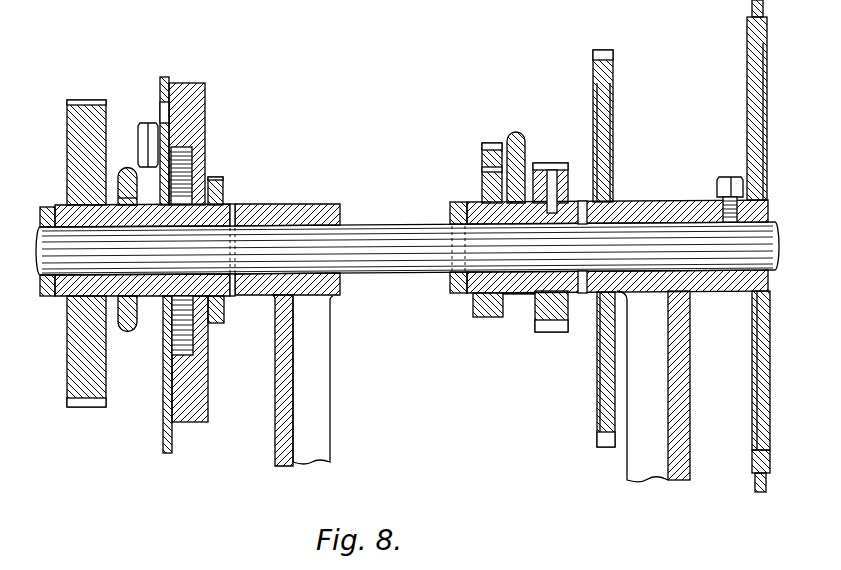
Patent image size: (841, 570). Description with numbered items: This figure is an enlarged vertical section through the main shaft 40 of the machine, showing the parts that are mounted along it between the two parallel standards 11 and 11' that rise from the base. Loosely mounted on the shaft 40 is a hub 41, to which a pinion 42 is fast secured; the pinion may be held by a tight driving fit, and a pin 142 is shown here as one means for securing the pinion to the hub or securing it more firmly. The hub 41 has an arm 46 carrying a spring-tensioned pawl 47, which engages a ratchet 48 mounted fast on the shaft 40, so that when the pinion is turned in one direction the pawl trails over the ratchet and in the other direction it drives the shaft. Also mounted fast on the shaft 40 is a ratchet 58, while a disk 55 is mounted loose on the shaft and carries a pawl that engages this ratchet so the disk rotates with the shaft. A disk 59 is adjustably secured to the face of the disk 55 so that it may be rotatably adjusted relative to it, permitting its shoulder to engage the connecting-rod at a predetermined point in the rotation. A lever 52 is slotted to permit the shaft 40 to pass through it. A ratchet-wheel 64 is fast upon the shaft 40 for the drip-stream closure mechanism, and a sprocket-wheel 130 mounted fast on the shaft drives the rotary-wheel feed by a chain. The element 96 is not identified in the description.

The shaft 40 is at (425, 266).
The ratchet-wheel 64 is at (67, 150).
The lever 52 is at (128, 332).
The disk 59 is at (162, 90).
The disk 55 is at (200, 109).
The ratchet 58 is at (223, 184).
The standard 11 is at (323, 380).
The pawl 47 is at (483, 157).
The ratchet 48 is at (484, 318).
The arm 46 is at (522, 140).
The pin 142 is at (568, 158).
The hub 41 is at (523, 294).
The pinion 42 is at (550, 333).
The disc 96 is at (613, 122).
The standard 11' is at (674, 386).
The sprocket-wheel 130 is at (747, 27).